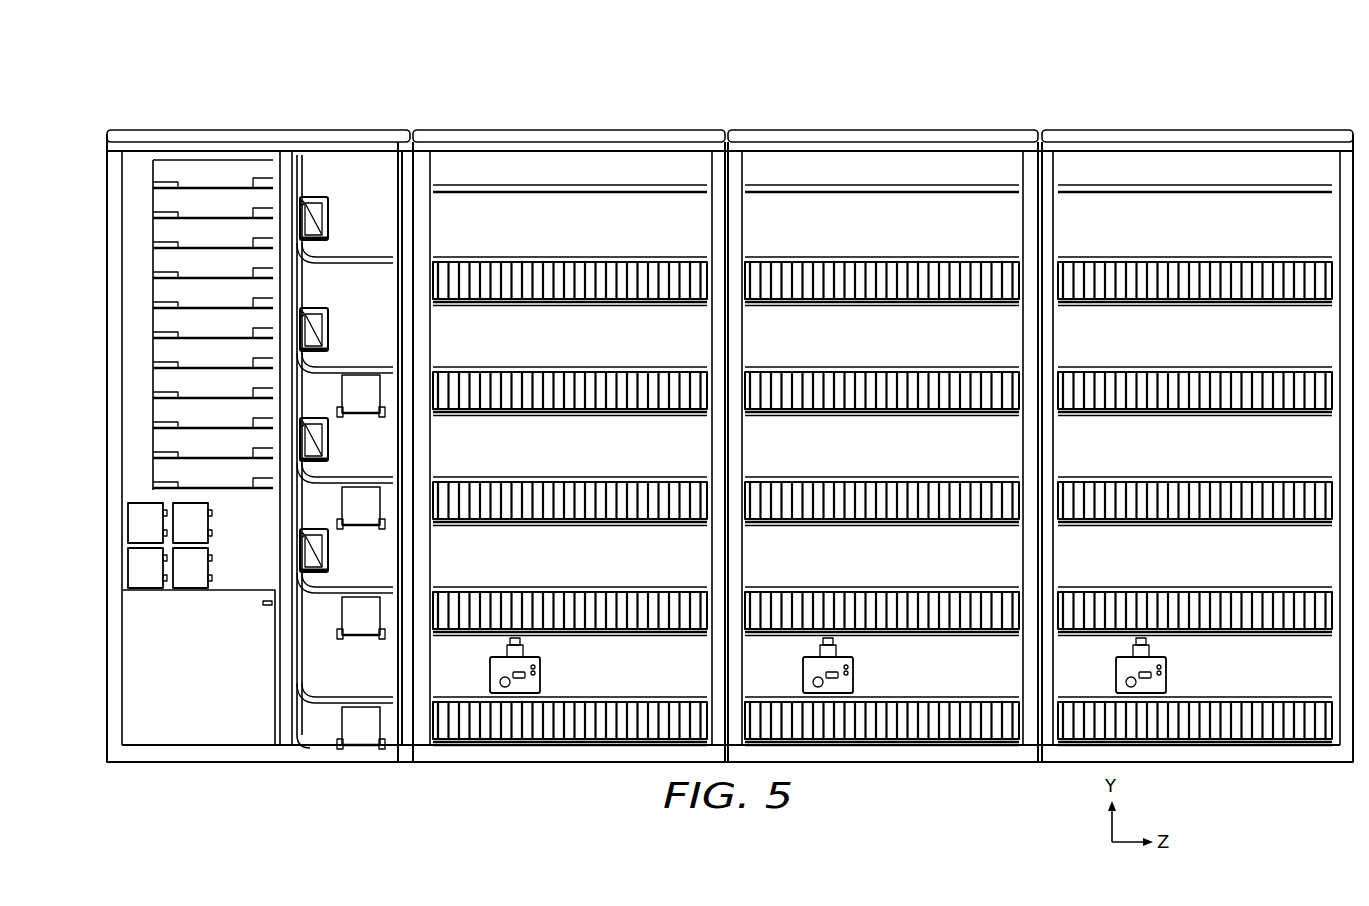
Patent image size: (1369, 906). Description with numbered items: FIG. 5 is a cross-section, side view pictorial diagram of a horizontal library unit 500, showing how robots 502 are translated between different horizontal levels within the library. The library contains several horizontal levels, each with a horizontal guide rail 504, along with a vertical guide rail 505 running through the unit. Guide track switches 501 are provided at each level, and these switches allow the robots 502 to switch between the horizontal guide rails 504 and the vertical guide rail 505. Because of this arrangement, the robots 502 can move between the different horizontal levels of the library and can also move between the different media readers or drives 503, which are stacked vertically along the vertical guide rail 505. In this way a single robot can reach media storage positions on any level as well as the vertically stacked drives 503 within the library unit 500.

The storage library system 500 is at (906, 108).
The guide track switches 501 is at (328, 175).
The robots 502 is at (542, 673).
The media readers/drive 503 is at (223, 170).
The horizontal guide rail 504 is at (1237, 696).
The vertical guide rail 505 is at (307, 752).